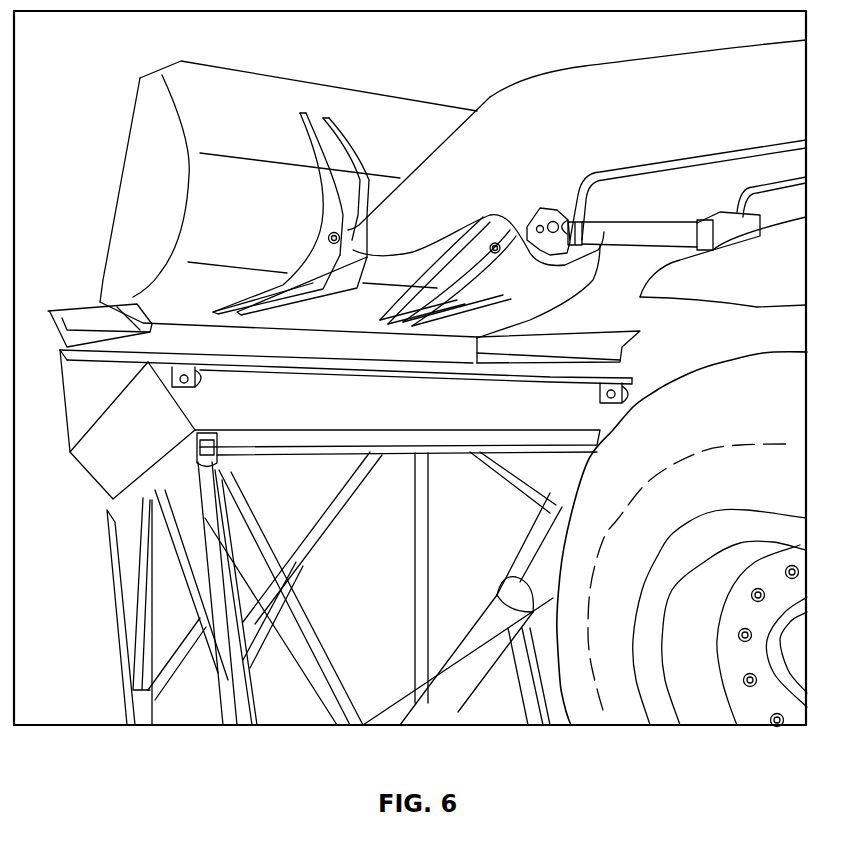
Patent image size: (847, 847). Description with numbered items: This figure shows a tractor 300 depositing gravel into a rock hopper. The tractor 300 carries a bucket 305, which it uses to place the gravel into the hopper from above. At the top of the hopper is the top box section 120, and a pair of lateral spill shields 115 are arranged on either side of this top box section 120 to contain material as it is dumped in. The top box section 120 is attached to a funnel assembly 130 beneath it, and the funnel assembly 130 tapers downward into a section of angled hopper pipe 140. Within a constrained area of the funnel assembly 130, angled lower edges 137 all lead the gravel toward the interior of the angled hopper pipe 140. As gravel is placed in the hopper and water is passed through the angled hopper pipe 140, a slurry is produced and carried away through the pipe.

The lateral spill shield 115 is at (80, 305).
The top box section 120 is at (362, 418).
The funnel assembly 130 is at (500, 537).
The angled lower edges 137 is at (402, 692).
The angled hopper pipe 140 is at (467, 653).
The tractor 300 is at (697, 111).
The bucket 305 is at (288, 88).